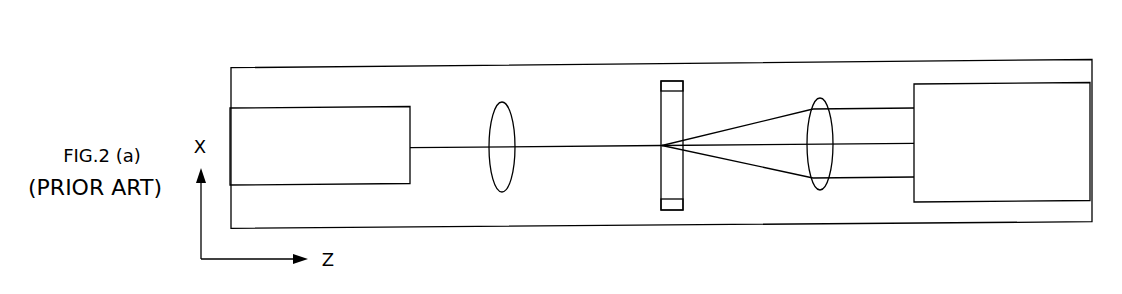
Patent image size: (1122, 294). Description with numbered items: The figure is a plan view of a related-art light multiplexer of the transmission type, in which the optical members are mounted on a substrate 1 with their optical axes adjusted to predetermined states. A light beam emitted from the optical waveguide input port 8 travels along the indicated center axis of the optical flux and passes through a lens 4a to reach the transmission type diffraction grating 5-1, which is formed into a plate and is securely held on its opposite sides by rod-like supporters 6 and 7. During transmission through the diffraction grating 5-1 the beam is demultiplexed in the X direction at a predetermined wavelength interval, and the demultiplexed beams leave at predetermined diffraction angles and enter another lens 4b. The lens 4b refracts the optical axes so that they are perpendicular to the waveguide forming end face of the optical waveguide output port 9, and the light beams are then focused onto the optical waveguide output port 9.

The substrate 1 is at (990, 223).
The lens 4a is at (500, 102).
The lens 4b is at (817, 97).
The transmission type diffraction grating 5-1 is at (660, 103).
The rod-like supporter 6 is at (683, 80).
The rod-like supporter 7 is at (683, 210).
The optical waveguide input port 8 is at (302, 108).
The optical waveguide output port 9 is at (1012, 83).